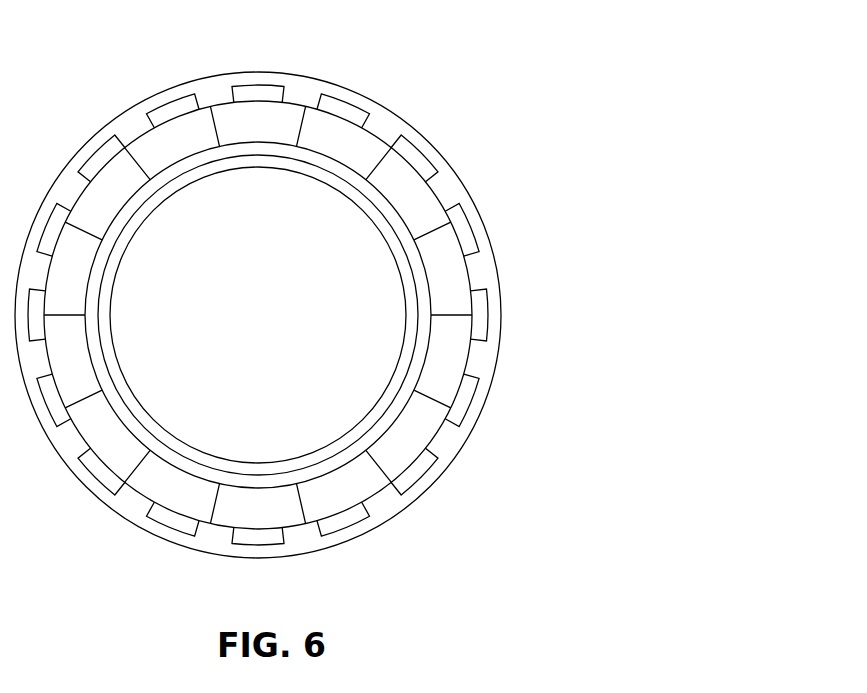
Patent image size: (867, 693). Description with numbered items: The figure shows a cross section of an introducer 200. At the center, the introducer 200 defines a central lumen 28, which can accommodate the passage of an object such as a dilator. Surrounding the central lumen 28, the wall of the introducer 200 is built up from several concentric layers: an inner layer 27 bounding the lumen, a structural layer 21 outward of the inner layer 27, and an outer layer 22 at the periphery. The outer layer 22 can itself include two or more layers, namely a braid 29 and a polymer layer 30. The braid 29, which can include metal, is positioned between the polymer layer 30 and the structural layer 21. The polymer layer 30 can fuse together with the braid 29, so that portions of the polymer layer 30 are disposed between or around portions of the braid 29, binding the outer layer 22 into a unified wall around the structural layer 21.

The introducer 200 is at (286, 316).
The outer layer 22 is at (448, 182).
The polymer layer 30 is at (308, 538).
The braid 29 is at (418, 468).
The structural layer 21 is at (448, 338).
The inner layer 27 is at (403, 365).
The central lumen 28 is at (250, 185).